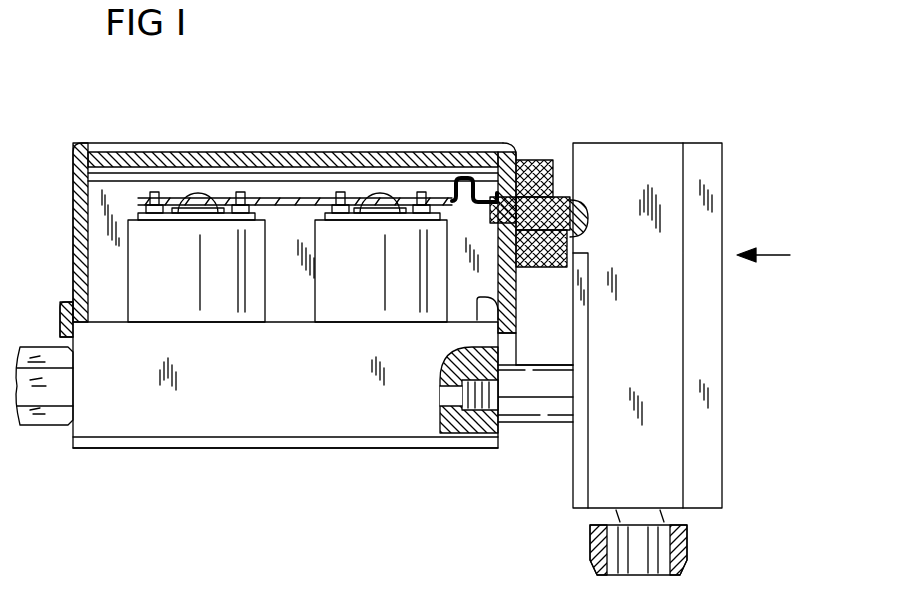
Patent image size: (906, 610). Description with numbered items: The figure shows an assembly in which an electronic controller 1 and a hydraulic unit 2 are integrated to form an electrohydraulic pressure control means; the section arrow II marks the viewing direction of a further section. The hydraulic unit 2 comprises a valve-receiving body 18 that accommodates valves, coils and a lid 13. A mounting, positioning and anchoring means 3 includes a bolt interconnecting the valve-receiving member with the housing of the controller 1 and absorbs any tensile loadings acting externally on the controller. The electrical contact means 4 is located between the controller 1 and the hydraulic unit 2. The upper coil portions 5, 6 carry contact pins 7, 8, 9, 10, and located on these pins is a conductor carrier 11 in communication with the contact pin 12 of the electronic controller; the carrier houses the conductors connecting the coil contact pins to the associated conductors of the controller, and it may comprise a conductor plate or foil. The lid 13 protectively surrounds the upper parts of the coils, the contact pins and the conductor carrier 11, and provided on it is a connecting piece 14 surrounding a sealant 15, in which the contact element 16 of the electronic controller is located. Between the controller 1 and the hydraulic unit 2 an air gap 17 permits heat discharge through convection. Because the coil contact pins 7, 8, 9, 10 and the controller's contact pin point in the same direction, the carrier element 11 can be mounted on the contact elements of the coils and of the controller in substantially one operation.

The electronic controller 1 is at (663, 480).
The hydraulic unit 2 is at (200, 448).
The mounting, positioning and anchoring means 3 is at (542, 422).
The electrical contact means 4 is at (547, 160).
The upper coil portion 5 is at (407, 237).
The upper coil portion 6 is at (217, 222).
The contact pin 7 is at (421, 192).
The contact pin 8 is at (340, 192).
The contact pin 9 is at (228, 228).
The contact pin 10 is at (154, 192).
The conductor carrier 11 is at (170, 198).
The contact pin of the electronic controller 12 is at (478, 172).
The lid 13 is at (76, 258).
The connecting piece 14 is at (533, 260).
The sealant 15 is at (582, 200).
The contact element 16 is at (508, 150).
The air gap 17 is at (537, 347).
The valve-receiving body 18 is at (122, 417).
The section line II is at (773, 253).